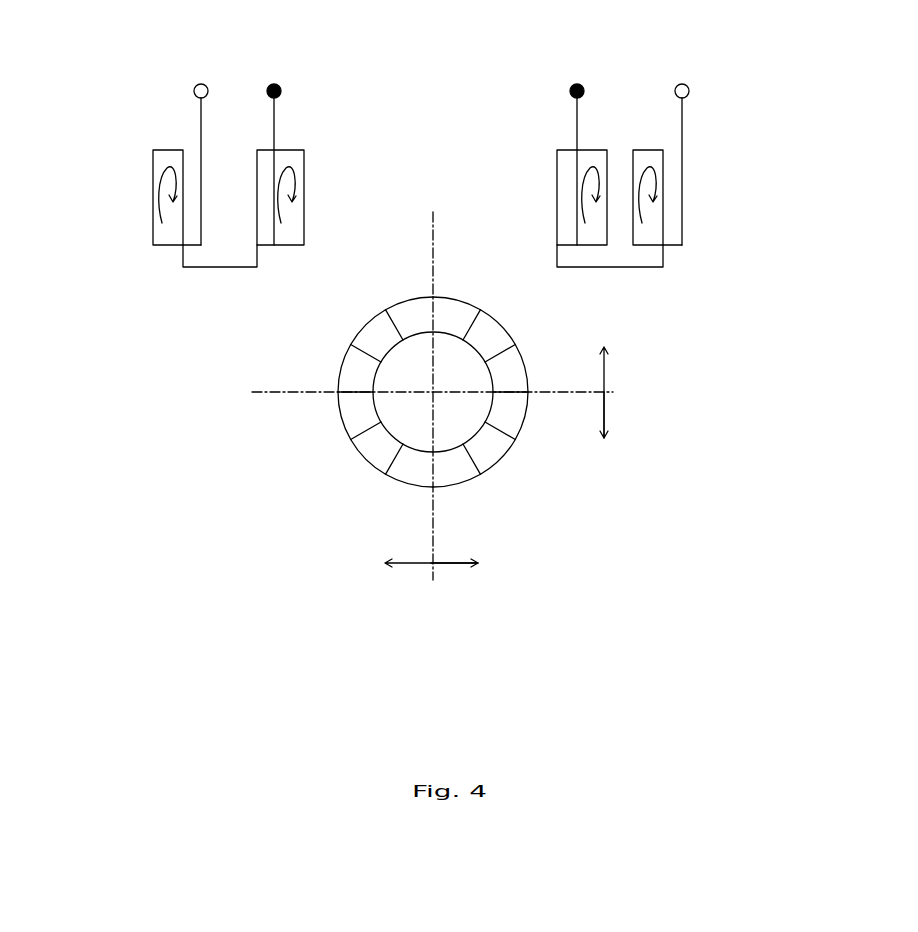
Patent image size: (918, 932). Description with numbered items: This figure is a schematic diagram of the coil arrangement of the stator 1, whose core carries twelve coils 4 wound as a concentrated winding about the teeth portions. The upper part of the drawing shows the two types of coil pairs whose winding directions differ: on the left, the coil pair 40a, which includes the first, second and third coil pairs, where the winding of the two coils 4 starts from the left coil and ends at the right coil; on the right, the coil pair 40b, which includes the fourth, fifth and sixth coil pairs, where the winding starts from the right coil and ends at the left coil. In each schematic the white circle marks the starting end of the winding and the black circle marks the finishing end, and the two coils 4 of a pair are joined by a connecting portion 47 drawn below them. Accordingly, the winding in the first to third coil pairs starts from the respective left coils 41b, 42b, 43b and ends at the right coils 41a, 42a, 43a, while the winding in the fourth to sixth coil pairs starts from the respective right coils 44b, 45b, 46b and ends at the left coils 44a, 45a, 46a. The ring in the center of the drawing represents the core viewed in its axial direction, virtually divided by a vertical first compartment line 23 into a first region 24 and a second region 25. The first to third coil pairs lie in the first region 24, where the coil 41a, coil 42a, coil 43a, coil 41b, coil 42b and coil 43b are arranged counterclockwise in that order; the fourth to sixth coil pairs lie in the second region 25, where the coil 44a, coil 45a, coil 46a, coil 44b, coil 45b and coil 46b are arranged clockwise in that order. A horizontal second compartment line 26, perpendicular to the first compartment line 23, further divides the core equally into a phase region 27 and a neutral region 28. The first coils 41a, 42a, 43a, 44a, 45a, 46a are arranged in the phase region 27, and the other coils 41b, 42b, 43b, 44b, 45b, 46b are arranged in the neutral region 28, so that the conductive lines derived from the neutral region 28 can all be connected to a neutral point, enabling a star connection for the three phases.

The stator 1 is at (312, 487).
The coil 4 is at (143, 189).
The first compartment line 23 is at (436, 237).
The first region 24 is at (410, 568).
The second region 25 is at (452, 568).
The second compartment line 26 is at (273, 395).
The phase region 27 is at (608, 372).
The neutral region 28 is at (608, 410).
The coil pair 40a is at (241, 70).
The coil pair 40b is at (631, 70).
The coil 41a is at (408, 305).
The coil 42a is at (368, 332).
The coil 43a is at (347, 363).
The coil 41b is at (348, 418).
The coil 42b is at (370, 448).
The coil 43b is at (408, 473).
The coil 44a is at (457, 305).
The coil 45a is at (497, 332).
The coil 46a is at (518, 363).
The coil 44b is at (518, 418).
The coil 45b is at (497, 448).
The coil 46b is at (458, 473).
The connecting wire 47 is at (213, 267).